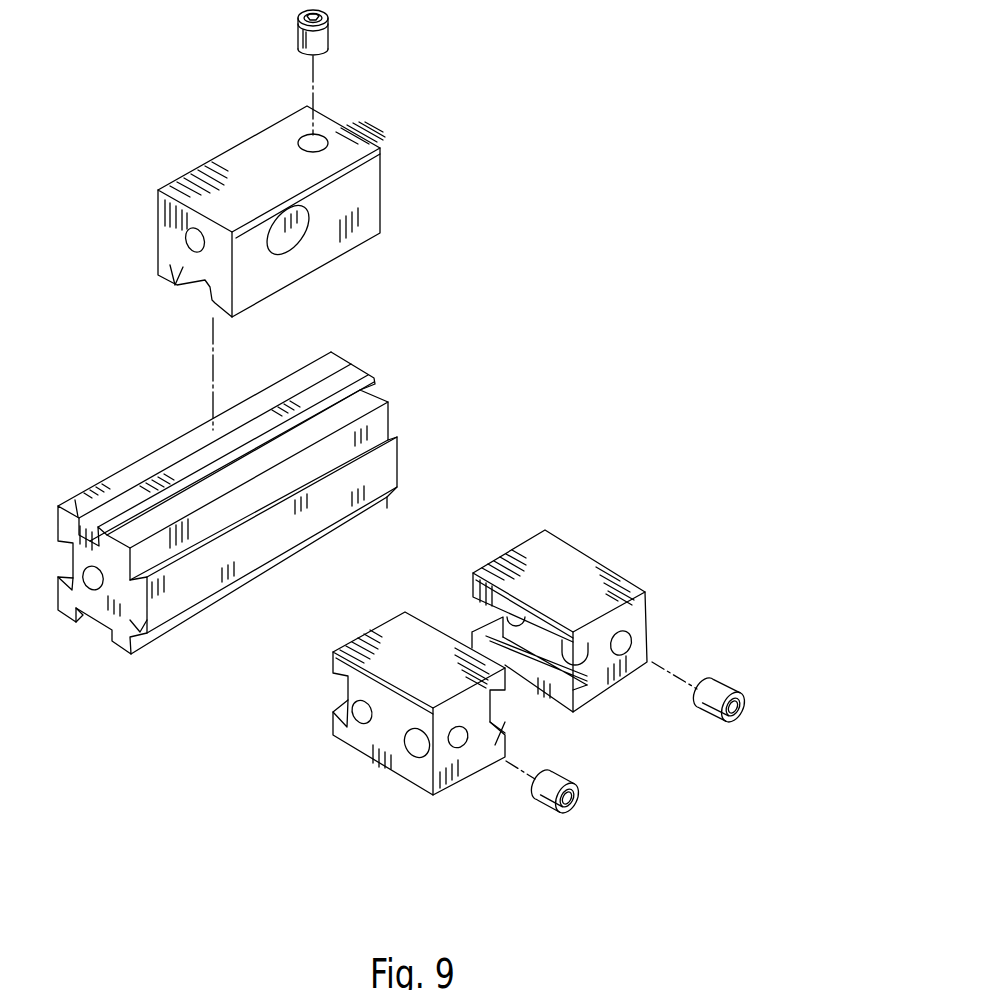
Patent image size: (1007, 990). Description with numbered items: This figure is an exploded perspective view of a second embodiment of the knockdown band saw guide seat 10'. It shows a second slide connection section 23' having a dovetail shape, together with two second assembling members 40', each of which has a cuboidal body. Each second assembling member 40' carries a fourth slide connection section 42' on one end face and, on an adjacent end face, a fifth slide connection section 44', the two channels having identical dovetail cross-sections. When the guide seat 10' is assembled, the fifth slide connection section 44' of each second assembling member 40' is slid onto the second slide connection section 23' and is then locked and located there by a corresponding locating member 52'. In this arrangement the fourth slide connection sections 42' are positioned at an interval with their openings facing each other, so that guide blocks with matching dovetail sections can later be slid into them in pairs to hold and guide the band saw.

The knockdown band saw guide seat 10' is at (448, 470).
The second slide connection section 23' is at (279, 482).
The second assembling member 40' is at (490, 655).
The fourth slide connection section 42' is at (560, 757).
The fifth slide connection section 44' is at (394, 632).
The locating member 52' is at (672, 765).